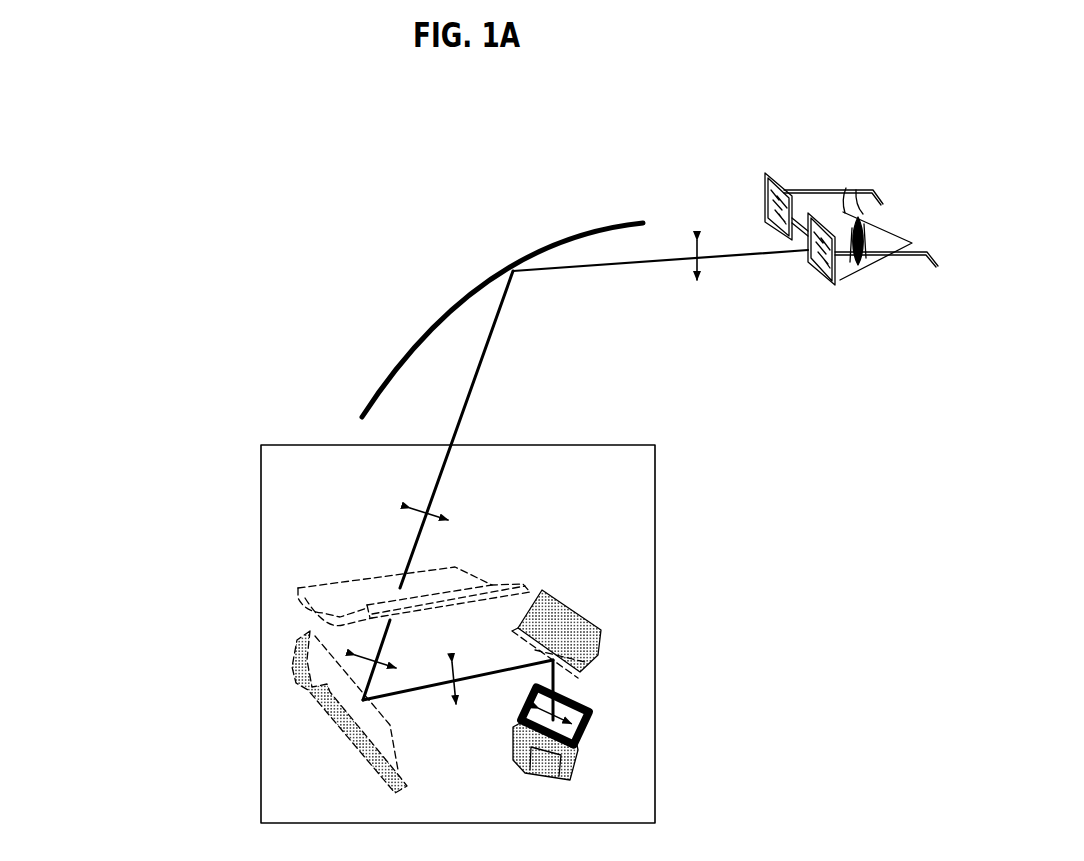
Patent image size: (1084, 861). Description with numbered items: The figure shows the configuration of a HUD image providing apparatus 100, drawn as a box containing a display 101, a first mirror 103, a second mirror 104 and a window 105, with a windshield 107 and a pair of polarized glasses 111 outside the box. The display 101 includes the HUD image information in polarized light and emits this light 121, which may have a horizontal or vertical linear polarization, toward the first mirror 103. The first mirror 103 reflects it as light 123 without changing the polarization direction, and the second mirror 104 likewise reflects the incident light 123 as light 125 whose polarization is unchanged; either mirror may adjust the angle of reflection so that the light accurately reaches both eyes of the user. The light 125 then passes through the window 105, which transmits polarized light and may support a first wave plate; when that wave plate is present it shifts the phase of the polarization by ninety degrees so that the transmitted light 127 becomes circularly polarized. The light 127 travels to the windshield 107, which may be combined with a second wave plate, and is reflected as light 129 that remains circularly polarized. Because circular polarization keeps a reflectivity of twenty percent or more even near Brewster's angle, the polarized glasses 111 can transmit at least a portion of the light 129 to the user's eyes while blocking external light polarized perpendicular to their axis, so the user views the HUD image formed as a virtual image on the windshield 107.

The HUD image providing apparatus 100 is at (473, 443).
The display 101 is at (580, 747).
The first mirror 103 is at (583, 617).
The second mirror 104 is at (322, 715).
The window 105 is at (323, 583).
The windshield 107 is at (553, 248).
The polarized glasses 111 is at (807, 192).
The light 121 is at (556, 690).
The light 123 is at (482, 722).
The light 125 is at (380, 670).
The light 127 is at (493, 333).
The light 129 is at (742, 258).